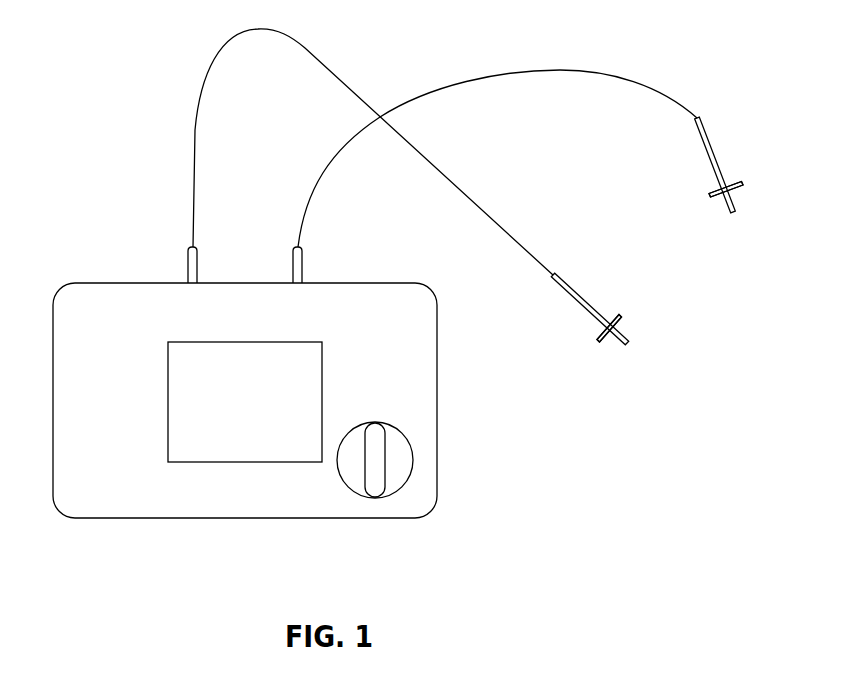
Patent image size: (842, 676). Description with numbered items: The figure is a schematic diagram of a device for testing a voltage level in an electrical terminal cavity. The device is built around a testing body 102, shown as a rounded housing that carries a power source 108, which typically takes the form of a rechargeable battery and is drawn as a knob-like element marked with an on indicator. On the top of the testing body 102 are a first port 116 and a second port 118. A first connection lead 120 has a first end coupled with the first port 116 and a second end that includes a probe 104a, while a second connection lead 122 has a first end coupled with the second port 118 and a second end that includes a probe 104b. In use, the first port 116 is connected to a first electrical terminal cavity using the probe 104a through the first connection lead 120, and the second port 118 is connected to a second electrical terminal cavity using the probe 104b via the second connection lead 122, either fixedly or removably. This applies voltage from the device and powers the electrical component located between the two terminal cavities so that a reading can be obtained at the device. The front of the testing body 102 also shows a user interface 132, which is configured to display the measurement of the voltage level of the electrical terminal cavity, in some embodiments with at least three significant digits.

The testing body 102 is at (110, 283).
The power source 108 is at (345, 483).
The first port 116 is at (184, 275).
The second port 118 is at (312, 270).
The first connection lead 120 is at (594, 332).
The second connection lead 122 is at (706, 183).
The probe 104a is at (619, 355).
The probe 104b is at (724, 225).
The user interface 132 is at (243, 462).